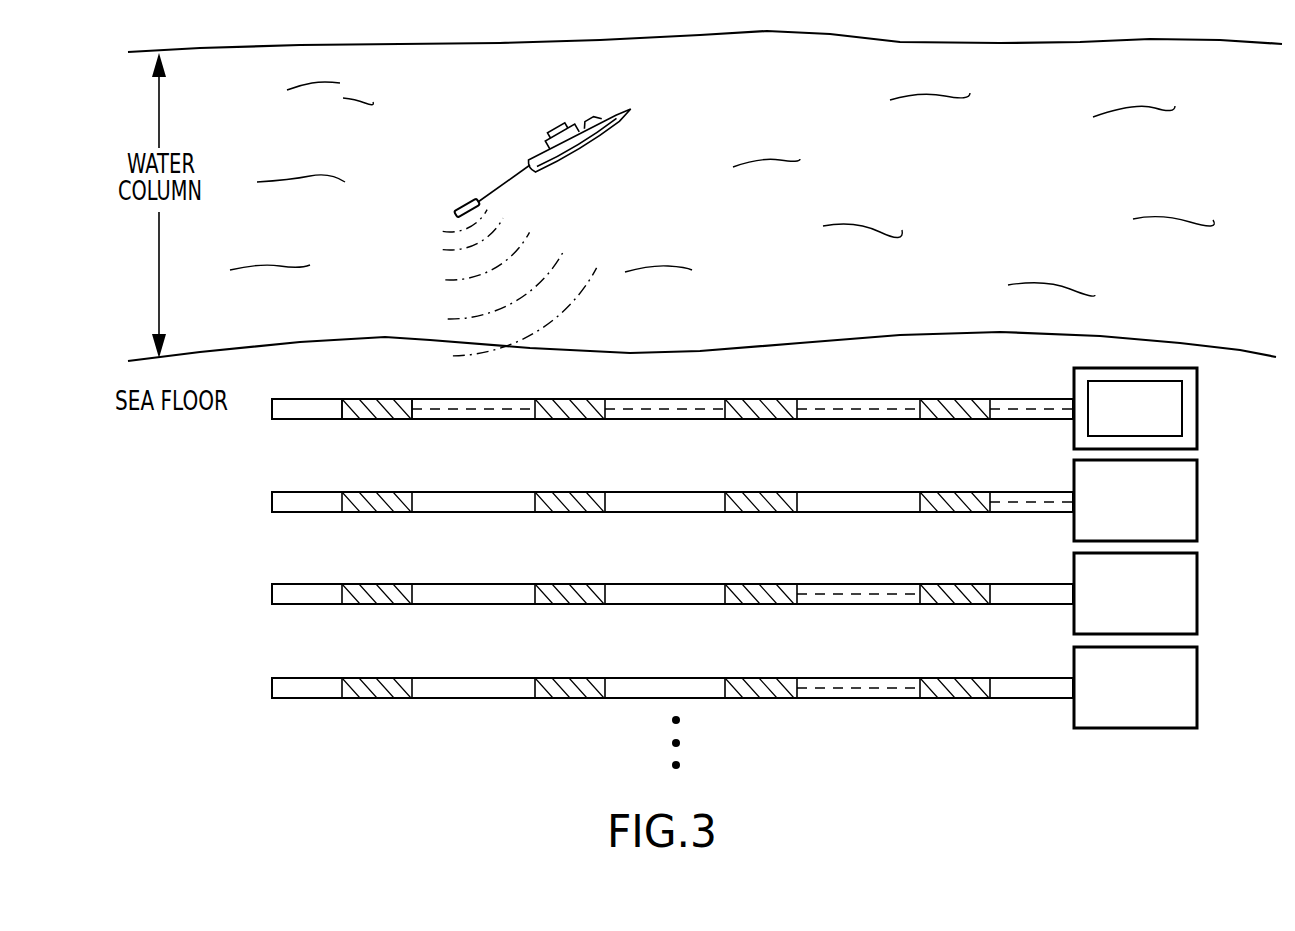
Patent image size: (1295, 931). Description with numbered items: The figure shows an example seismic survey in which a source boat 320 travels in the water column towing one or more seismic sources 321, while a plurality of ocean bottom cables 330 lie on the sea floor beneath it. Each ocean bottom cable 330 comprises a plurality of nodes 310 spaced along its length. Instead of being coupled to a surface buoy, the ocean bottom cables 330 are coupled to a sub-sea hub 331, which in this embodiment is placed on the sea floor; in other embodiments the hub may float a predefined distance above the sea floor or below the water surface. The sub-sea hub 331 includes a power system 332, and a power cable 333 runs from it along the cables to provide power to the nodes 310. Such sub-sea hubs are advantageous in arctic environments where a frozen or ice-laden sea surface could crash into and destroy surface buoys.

The node 310 is at (377, 398).
The source boat 320 is at (590, 130).
The seismic source 321 is at (459, 206).
The ocean bottom cable 330 is at (463, 398).
The sub-sea hub 331 is at (1197, 388).
The power system 332 is at (1182, 430).
The power cable 333 is at (662, 410).